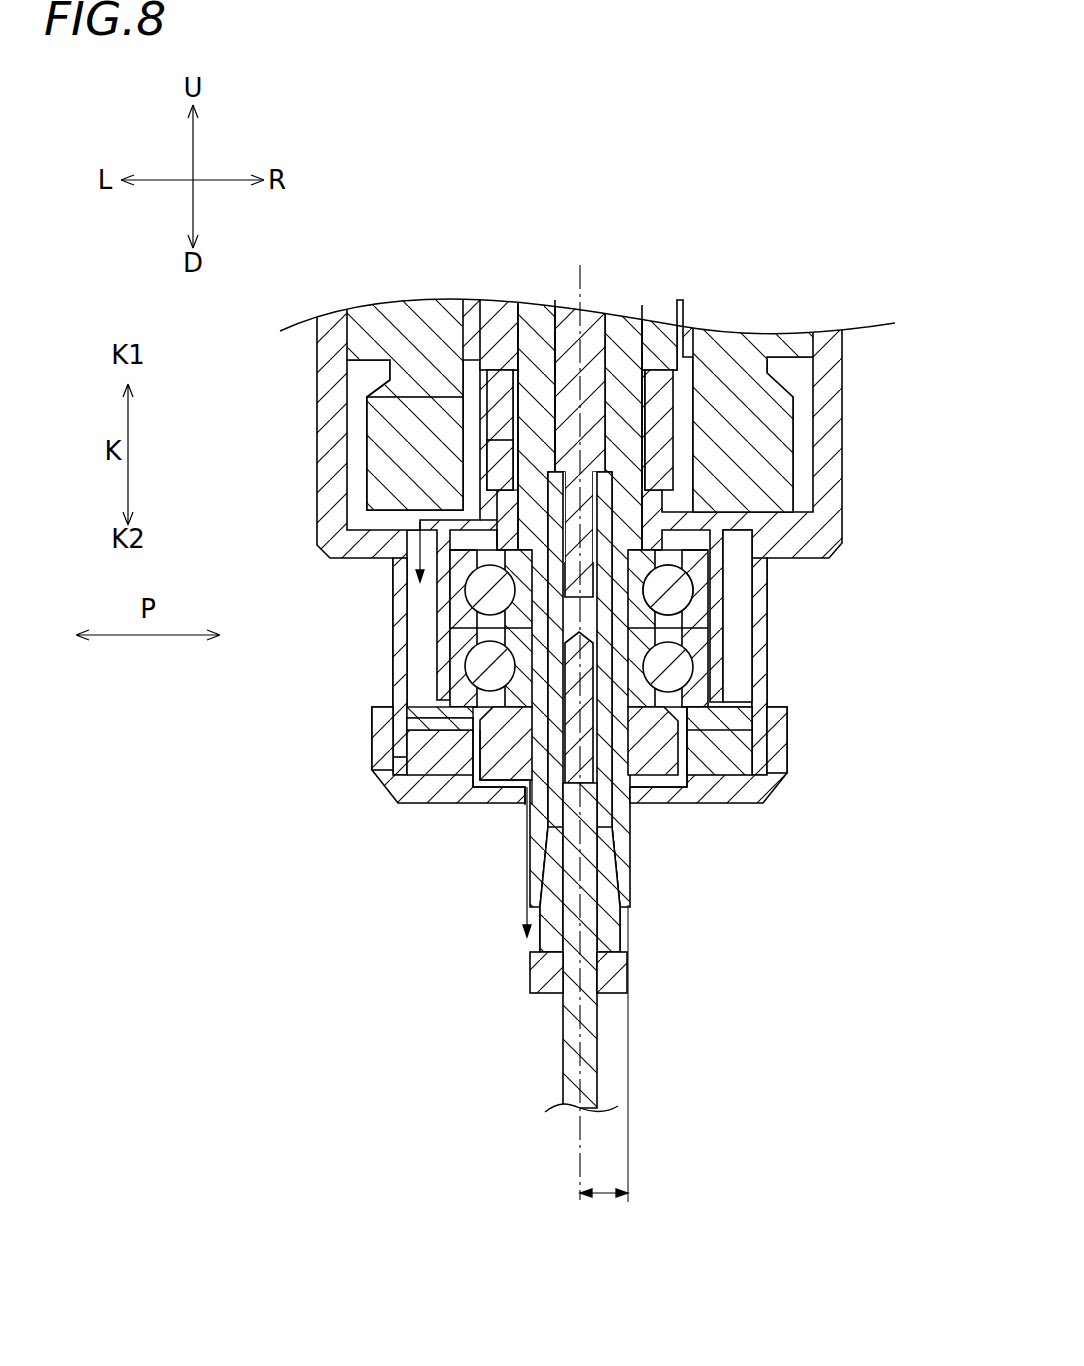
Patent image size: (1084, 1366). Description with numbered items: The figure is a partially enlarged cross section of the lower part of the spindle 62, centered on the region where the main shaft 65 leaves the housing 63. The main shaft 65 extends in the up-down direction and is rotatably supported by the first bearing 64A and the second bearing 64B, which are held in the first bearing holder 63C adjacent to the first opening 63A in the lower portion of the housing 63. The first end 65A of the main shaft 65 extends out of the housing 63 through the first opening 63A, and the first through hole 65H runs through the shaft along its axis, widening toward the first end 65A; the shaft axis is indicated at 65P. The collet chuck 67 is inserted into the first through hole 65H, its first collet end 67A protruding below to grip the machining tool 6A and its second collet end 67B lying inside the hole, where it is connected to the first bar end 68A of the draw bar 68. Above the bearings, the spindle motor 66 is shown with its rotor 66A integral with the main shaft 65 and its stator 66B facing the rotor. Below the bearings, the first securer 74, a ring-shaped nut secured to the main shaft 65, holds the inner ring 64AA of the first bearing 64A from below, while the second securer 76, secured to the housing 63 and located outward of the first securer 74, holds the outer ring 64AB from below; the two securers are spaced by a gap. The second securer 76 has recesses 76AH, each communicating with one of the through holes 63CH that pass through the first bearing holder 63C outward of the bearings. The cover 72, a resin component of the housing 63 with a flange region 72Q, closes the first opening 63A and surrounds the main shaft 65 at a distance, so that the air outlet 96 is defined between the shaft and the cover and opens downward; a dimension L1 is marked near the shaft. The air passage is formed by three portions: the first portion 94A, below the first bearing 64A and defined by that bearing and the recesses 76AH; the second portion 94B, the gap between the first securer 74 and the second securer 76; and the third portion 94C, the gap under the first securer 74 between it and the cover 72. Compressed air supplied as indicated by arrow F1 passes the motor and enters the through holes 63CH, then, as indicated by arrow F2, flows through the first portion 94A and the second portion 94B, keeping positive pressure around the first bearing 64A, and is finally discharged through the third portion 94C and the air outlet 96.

The machining tool 6A is at (598, 1052).
The spindle 62 is at (815, 248).
The housing 63 is at (843, 366).
The first opening 63A is at (402, 777).
The first bearing holder 63C is at (762, 598).
The through holes 63CH is at (737, 628).
The first bearing 64A is at (460, 658).
The inner ring 64AA is at (705, 640).
The outer ring 64AB is at (690, 773).
The second bearing 64B is at (718, 566).
The main shaft 65 is at (674, 395).
The first end 65A is at (623, 903).
The first through hole 65H is at (556, 338).
The center axis of sleeve 65P is at (578, 1152).
The spindle motor 66 is at (797, 413).
The rotor 66A is at (497, 313).
The stator 66B is at (387, 425).
The collet chuck 67 is at (613, 515).
The first collet end 67A is at (623, 942).
The second collet end 67B is at (606, 488).
The draw bar 68 is at (605, 348).
The first bar end 68A is at (492, 487).
The cover 72 is at (424, 806).
The flange of bracket 72Q is at (374, 744).
The first securer 74 is at (656, 768).
The second securer 76 is at (755, 773).
The recesses 76AH is at (722, 720).
The first portion 94A is at (445, 724).
The second portion 94B is at (447, 748).
The third portion 94C is at (488, 785).
The air outlet 96 is at (640, 800).
The arrow F1 is at (472, 388).
The arrow F2 is at (522, 913).
The dimension L1 is at (602, 1198).